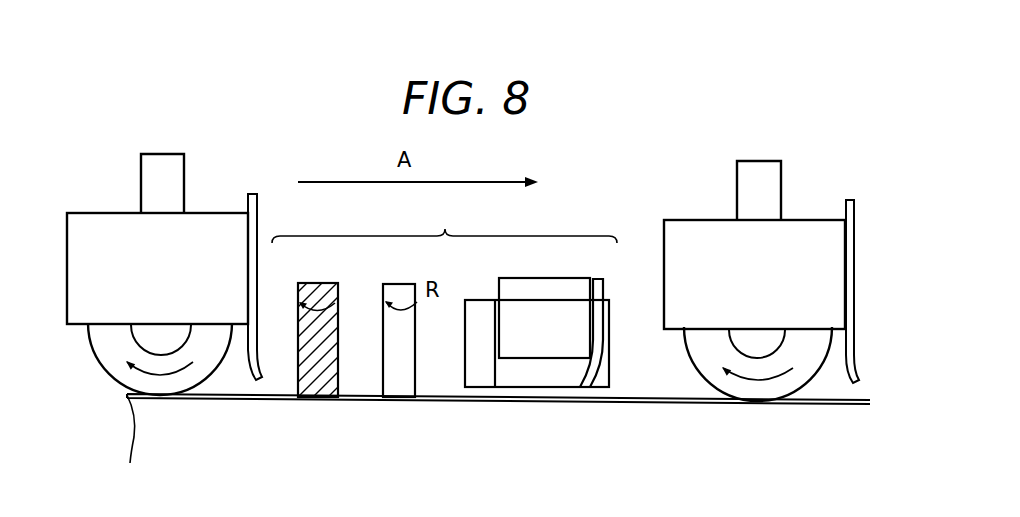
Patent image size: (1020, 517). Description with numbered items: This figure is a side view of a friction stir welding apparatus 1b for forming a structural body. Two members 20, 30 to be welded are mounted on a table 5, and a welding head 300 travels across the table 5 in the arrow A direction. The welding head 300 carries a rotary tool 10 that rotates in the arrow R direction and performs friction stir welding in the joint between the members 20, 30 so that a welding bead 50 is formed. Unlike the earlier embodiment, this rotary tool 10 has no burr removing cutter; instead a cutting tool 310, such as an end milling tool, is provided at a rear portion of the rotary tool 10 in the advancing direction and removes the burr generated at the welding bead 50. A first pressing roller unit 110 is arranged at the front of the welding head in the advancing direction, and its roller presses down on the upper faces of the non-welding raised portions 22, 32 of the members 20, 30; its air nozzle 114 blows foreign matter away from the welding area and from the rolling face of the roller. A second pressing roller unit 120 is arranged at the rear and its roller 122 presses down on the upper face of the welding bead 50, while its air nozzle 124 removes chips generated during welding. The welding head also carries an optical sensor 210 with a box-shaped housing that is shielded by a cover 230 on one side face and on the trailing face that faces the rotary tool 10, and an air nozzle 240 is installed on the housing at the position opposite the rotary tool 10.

The friction stir welding apparatus 1b is at (595, 158).
The table 5 is at (426, 449).
The rotary tool 10 is at (416, 353).
The member 20 is at (720, 456).
The member 30 is at (730, 425).
The non-welding raised portion 22 is at (899, 413).
The non-welding raised portion 32 is at (868, 473).
The welding bead 50 is at (277, 393).
The first pressing roller unit 110 is at (810, 235).
The air nozzle 114 is at (857, 363).
The second pressing roller unit 120 is at (209, 227).
The roller 122 is at (190, 372).
The air nozzle 124 is at (259, 242).
The optical sensor 210 is at (548, 292).
The cover 230 is at (482, 308).
The air nozzle 240 is at (595, 390).
The welding head 300 is at (602, 324).
The cutting tool 310 is at (328, 289).